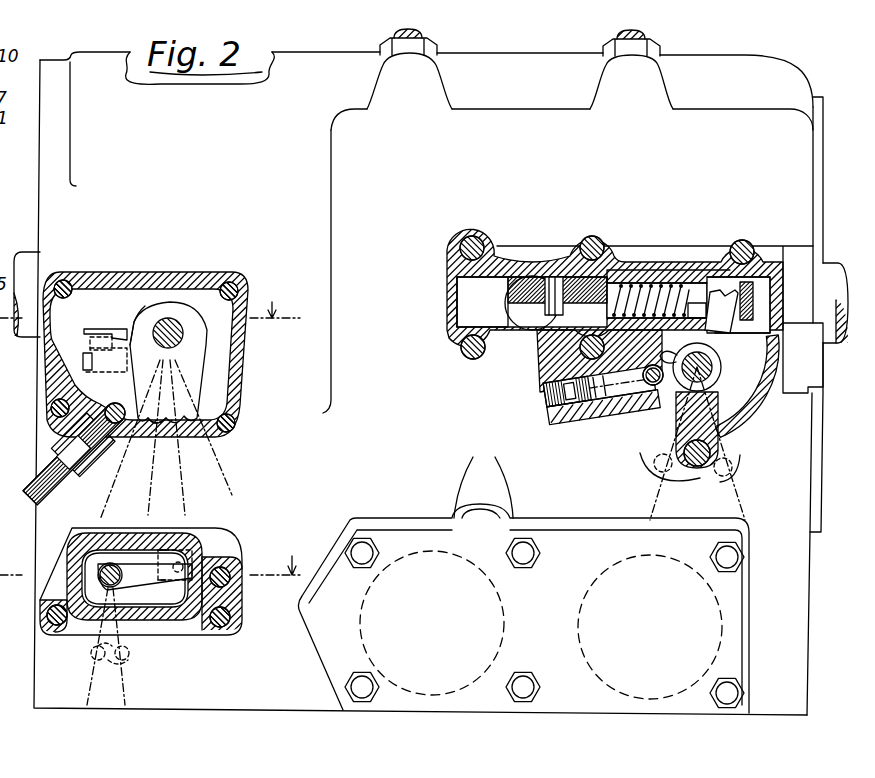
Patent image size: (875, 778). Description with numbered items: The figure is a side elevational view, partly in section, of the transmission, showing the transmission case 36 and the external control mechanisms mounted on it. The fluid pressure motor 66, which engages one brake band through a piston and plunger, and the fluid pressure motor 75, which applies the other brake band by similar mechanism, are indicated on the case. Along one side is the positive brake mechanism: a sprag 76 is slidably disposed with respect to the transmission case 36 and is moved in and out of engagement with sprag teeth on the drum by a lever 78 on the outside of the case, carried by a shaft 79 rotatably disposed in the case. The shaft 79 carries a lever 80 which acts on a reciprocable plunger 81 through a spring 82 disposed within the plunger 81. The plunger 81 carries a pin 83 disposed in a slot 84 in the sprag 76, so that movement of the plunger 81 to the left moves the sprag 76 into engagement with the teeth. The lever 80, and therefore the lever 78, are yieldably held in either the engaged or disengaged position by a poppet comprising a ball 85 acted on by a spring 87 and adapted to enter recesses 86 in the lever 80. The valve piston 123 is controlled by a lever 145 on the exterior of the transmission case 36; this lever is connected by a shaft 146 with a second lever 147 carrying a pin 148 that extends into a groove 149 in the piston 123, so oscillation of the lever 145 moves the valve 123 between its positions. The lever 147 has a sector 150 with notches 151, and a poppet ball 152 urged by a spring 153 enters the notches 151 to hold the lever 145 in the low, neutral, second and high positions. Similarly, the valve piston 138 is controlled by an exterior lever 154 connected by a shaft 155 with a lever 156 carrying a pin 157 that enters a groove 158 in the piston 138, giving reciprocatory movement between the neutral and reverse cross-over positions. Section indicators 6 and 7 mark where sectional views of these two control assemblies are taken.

The transmission case 36 is at (262, 161).
The lever 145 is at (222, 393).
The section line 6 is at (150, 300).
The section line 7 is at (150, 555).
The spring 153 is at (80, 440).
The ball 152 is at (121, 423).
The sector 150 is at (203, 376).
The shaft 146 is at (187, 334).
The second lever 147 is at (135, 325).
The valve piston 123 is at (125, 313).
The groove 149 is at (88, 342).
The pin 148 is at (83, 363).
The notches 151 is at (150, 426).
The valve piston 138 is at (188, 620).
The shaft 155 is at (100, 578).
The lever 156 is at (148, 538).
The pin 157 is at (235, 538).
The groove 158 is at (188, 566).
The lever 154 is at (138, 648).
The sprag 76 is at (528, 332).
The slot 84 is at (512, 303).
The plunger 81 is at (522, 275).
The pin 83 is at (555, 285).
The spring 82 is at (641, 283).
The lever 80 is at (763, 375).
The shaft 79 is at (747, 393).
The recesses 86 is at (680, 356).
The lever 78 is at (640, 462).
The spring 87 is at (600, 410).
The ball 85 is at (650, 385).
The fluid pressure motor 75 is at (427, 697).
The fluid pressure motor 66 is at (642, 697).